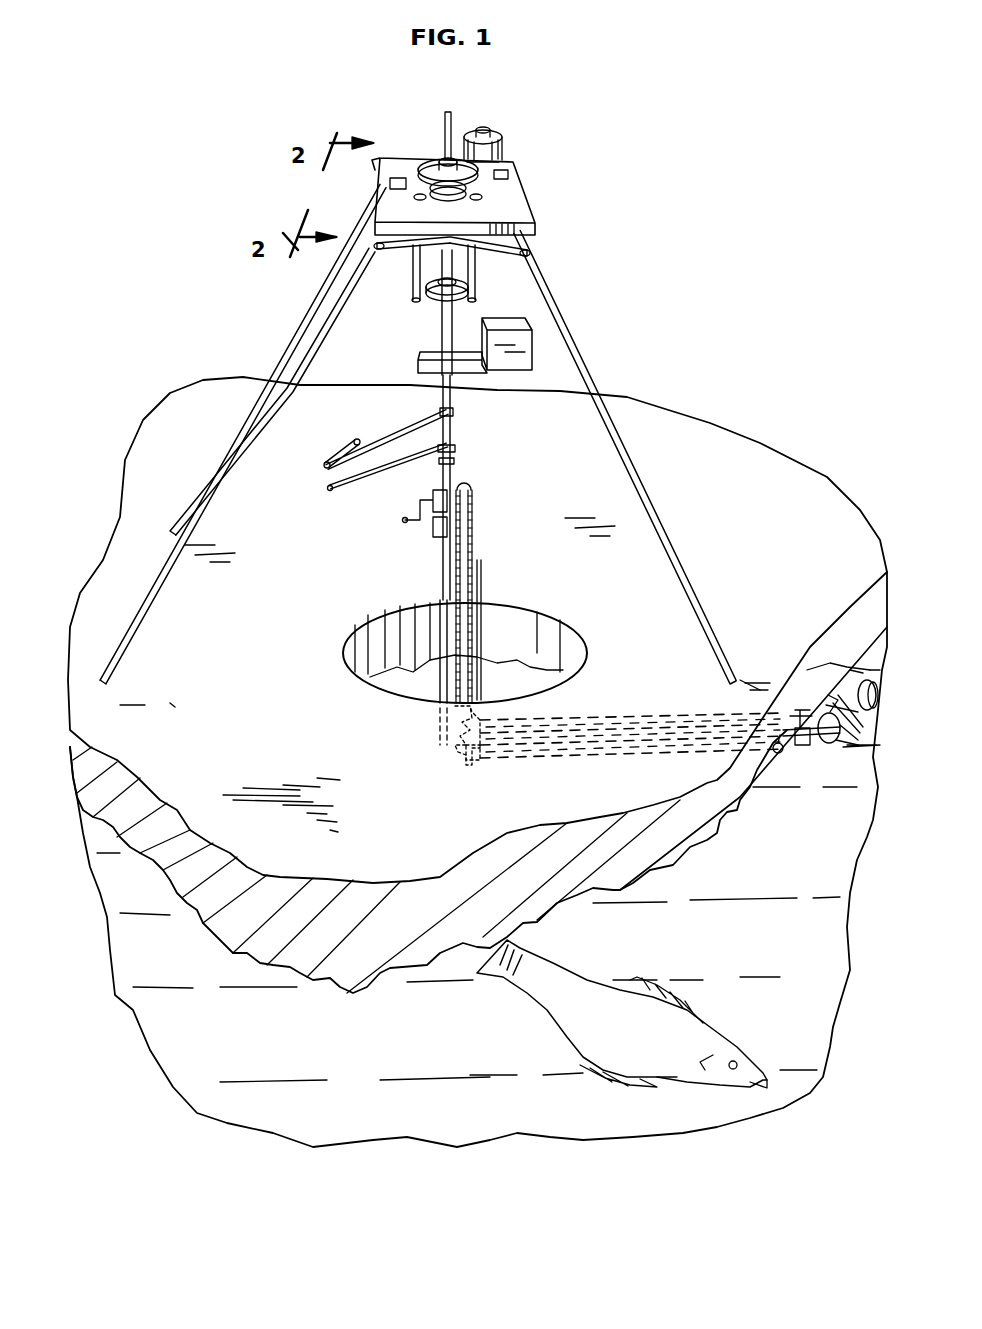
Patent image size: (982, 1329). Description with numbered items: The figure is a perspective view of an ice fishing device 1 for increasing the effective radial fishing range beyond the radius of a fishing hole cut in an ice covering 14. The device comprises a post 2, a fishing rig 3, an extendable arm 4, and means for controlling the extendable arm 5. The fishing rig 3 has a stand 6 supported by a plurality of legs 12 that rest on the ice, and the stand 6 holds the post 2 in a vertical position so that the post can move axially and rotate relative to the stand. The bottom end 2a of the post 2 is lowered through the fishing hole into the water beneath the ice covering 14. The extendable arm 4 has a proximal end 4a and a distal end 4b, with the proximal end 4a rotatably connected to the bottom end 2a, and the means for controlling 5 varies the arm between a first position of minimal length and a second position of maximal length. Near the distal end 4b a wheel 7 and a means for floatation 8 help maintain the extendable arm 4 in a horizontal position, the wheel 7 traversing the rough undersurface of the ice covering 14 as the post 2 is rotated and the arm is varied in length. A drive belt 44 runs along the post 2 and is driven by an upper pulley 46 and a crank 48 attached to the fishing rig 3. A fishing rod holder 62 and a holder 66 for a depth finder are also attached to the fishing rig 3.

The ice fishing device 1 is at (489, 467).
The post 2 is at (453, 325).
The bottom end of the post 2a is at (447, 745).
The fishing rig 3 is at (288, 320).
The extendable arm 4 is at (637, 713).
The proximal end of the extendable arm 4a is at (450, 748).
The distal end of the extendable arm 4b is at (797, 750).
The means for controlling the extendable arm 5 is at (486, 559).
The stand 6 is at (548, 238).
The wheel 7 is at (842, 682).
The means for floatation 8 is at (820, 743).
The legs 12 is at (268, 360).
The ice covering 14 is at (272, 632).
The drive belt 44 is at (482, 588).
The upper pulley 46 is at (467, 490).
The crank 48 is at (420, 498).
The fishing rod holder 62 is at (355, 442).
The holder 66 is at (417, 362).